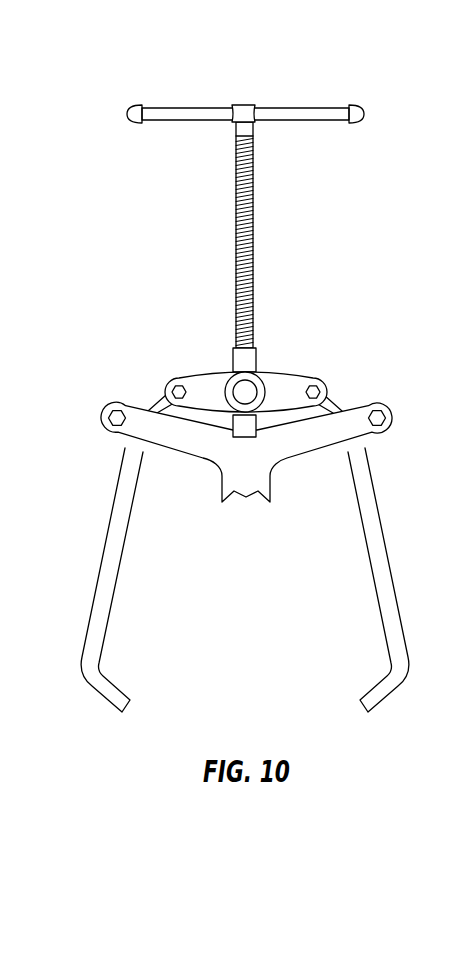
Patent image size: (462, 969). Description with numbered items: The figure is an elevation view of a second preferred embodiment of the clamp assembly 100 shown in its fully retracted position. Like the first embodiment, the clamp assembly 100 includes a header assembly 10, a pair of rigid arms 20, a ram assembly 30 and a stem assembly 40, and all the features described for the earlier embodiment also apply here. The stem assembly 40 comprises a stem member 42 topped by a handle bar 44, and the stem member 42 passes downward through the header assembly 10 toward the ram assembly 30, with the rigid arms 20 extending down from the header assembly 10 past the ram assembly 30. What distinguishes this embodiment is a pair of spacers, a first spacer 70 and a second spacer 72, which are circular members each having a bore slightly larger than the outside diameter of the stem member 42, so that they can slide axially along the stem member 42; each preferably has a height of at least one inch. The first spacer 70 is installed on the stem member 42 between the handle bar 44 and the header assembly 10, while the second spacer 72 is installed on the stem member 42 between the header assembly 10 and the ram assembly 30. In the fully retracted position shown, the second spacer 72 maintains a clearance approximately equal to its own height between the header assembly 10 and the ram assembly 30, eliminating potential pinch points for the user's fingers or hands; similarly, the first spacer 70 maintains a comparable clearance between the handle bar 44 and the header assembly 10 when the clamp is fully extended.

The clamp assembly 100 is at (113, 69).
The header assembly 10 is at (201, 374).
The rigid arms 20 is at (109, 537).
The ram assembly 30 is at (193, 443).
The stem assembly 40 is at (245, 103).
The stem member 42 is at (254, 216).
The handle bar 44 is at (305, 107).
The first spacer 70 is at (257, 362).
The second spacer 72 is at (247, 428).